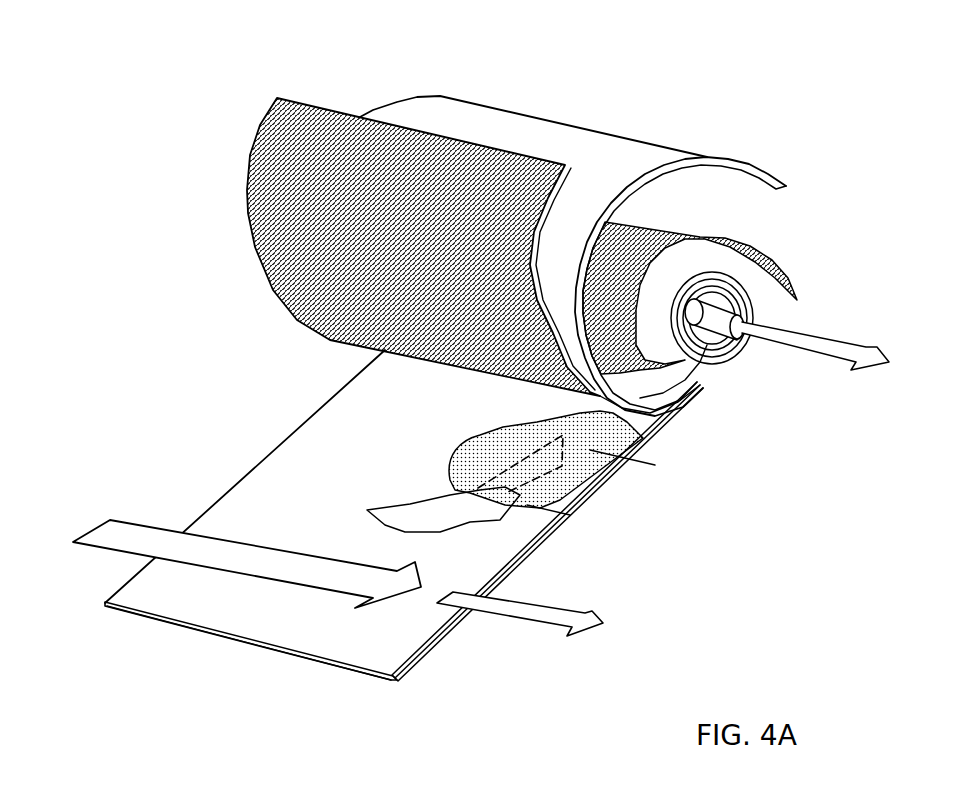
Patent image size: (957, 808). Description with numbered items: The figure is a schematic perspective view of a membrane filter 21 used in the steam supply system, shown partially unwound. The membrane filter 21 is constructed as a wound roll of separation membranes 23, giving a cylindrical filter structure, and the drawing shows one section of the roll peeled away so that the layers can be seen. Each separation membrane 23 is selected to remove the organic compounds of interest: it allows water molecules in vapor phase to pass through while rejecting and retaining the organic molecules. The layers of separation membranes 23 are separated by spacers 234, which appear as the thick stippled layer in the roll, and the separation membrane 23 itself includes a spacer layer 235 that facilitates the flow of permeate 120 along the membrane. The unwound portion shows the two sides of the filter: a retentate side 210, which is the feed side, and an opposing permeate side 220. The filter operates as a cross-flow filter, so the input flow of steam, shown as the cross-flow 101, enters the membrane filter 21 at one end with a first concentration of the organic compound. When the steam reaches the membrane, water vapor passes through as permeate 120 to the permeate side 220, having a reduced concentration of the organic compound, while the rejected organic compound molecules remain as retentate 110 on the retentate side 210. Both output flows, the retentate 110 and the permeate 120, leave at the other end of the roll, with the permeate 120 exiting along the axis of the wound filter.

The membrane filter 21 is at (174, 80).
The separation membrane 23 is at (638, 152).
The spacer 234 is at (270, 192).
The spacer layer 235 is at (640, 452).
The retentate side 210 is at (273, 472).
The permeate side 220 is at (226, 650).
The cross-flow 101 is at (124, 535).
The retentate 110 is at (521, 612).
The permeate 120 is at (823, 348).